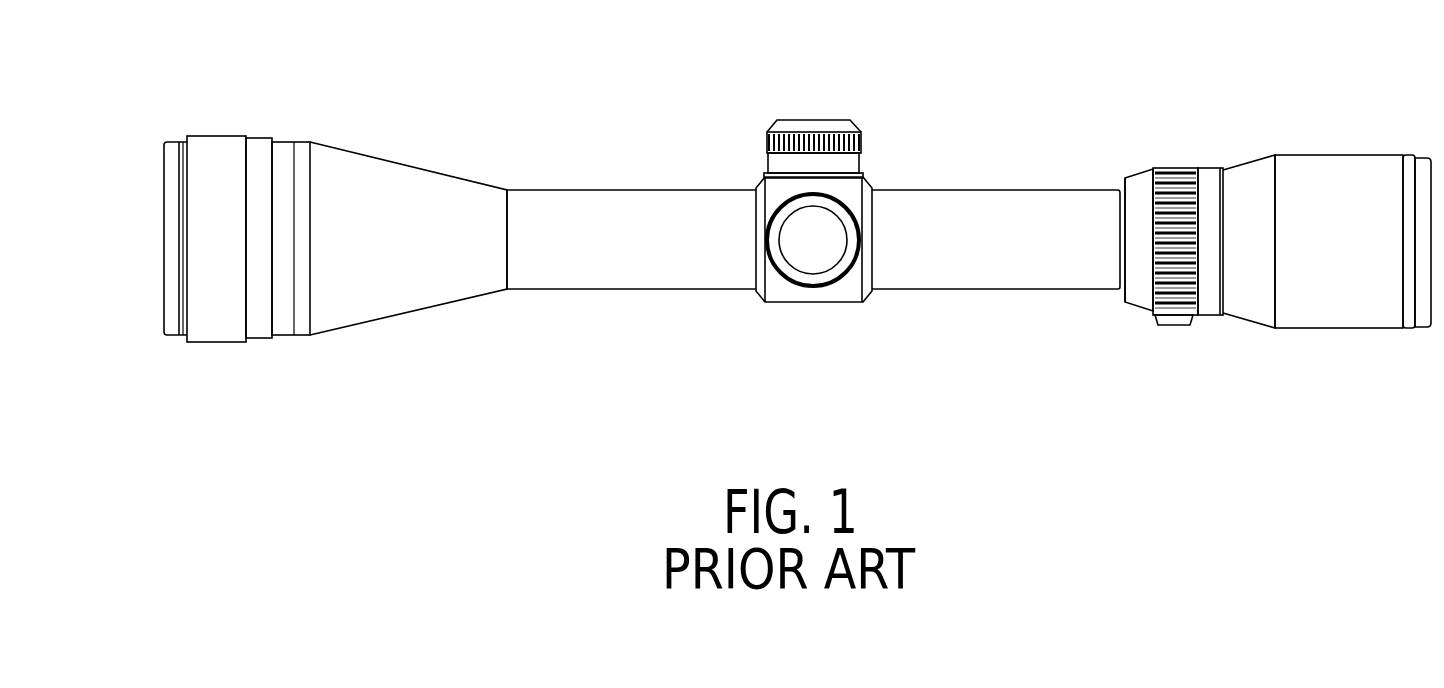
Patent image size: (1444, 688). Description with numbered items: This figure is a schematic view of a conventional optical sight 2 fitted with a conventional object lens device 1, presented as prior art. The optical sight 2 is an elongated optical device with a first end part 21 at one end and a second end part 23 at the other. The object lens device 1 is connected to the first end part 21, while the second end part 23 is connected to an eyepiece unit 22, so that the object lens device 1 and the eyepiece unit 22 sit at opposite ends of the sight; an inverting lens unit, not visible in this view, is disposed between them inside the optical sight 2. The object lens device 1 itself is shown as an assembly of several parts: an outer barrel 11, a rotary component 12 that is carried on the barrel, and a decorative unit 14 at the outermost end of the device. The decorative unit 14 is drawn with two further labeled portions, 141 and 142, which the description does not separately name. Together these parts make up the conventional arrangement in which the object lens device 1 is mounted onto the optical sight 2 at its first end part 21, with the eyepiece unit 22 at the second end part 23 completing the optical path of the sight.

The object lens device 1 is at (211, 242).
The outer barrel 11 is at (284, 325).
The rotary component 12 is at (225, 153).
The decorative unit 14 is at (146, 260).
The eyepiece lens rim 141 is at (170, 223).
The eyepiece cap inner ring 142 is at (182, 188).
The optical sight 2 is at (870, 246).
The first end part 21 is at (508, 243).
The eyepiece unit 22 is at (1315, 303).
The second end part 23 is at (1115, 243).